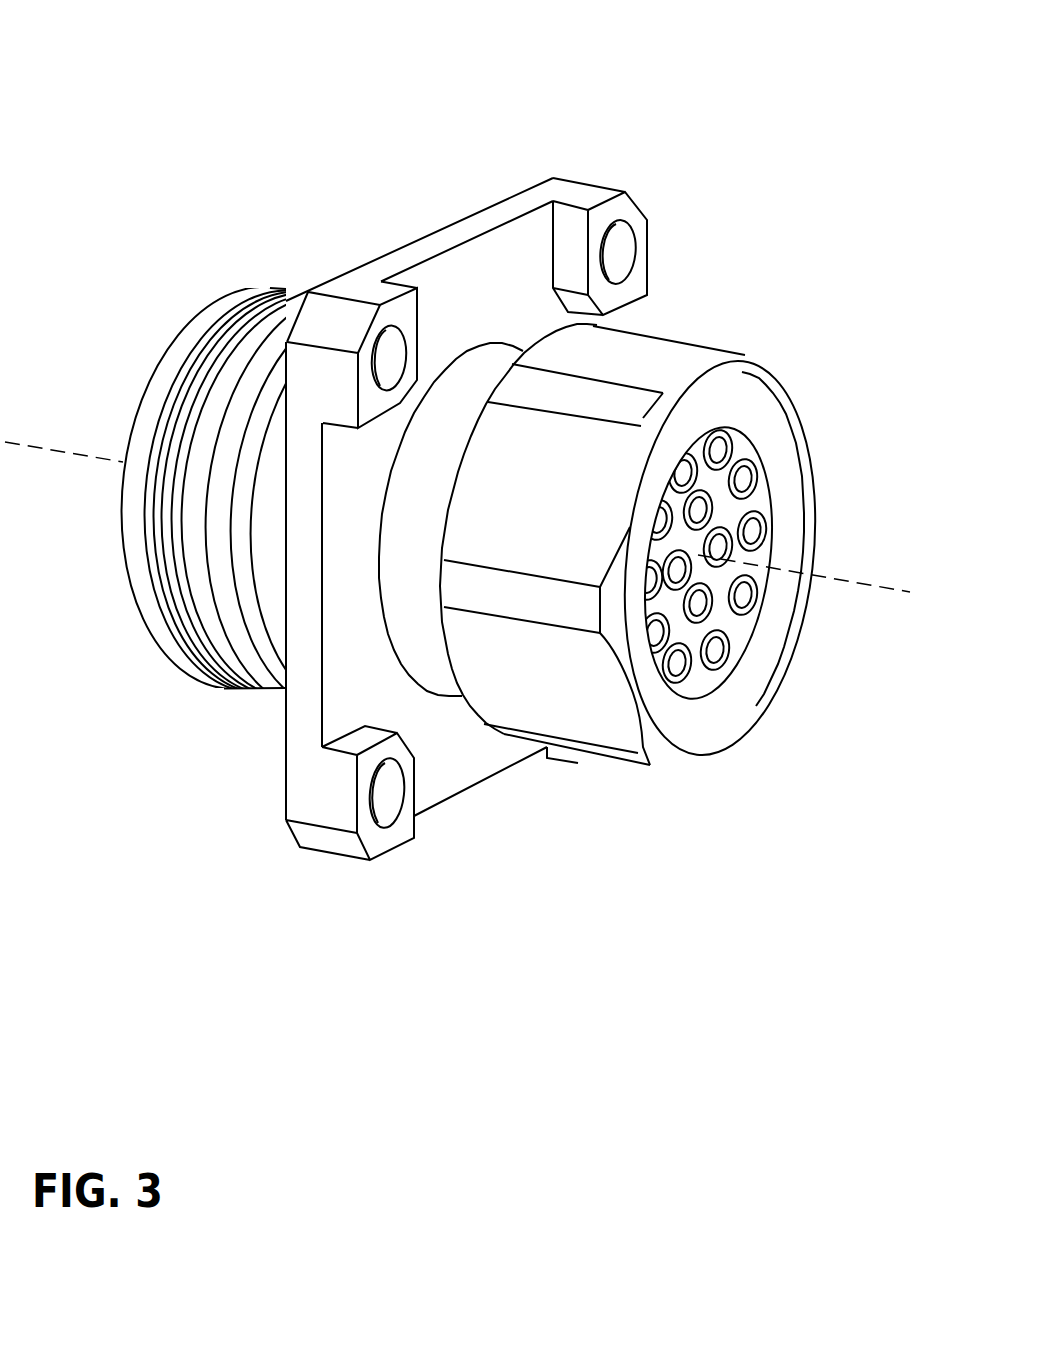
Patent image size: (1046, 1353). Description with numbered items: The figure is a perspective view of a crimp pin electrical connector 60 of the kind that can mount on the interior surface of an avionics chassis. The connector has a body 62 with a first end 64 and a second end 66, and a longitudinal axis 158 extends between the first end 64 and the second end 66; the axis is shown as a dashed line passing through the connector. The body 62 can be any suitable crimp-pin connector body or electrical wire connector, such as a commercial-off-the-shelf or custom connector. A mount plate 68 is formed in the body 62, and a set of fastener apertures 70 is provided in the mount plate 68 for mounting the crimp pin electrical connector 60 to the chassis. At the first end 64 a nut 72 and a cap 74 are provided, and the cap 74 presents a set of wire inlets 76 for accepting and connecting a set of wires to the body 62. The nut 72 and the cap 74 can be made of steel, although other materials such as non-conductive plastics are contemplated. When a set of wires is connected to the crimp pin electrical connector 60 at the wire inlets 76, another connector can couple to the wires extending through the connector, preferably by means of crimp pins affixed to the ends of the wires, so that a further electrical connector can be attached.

The crimp pin electrical connector 60 is at (120, 41).
The body 62 is at (461, 283).
The first end 64 is at (765, 745).
The second end 66 is at (130, 373).
The mount plate 68 is at (510, 255).
The fastener apertures 70 is at (392, 345).
The nut 72 is at (572, 717).
The cap 74 is at (752, 502).
The wire inlets 76 is at (765, 533).
The longitudinal axis 158 is at (97, 457).